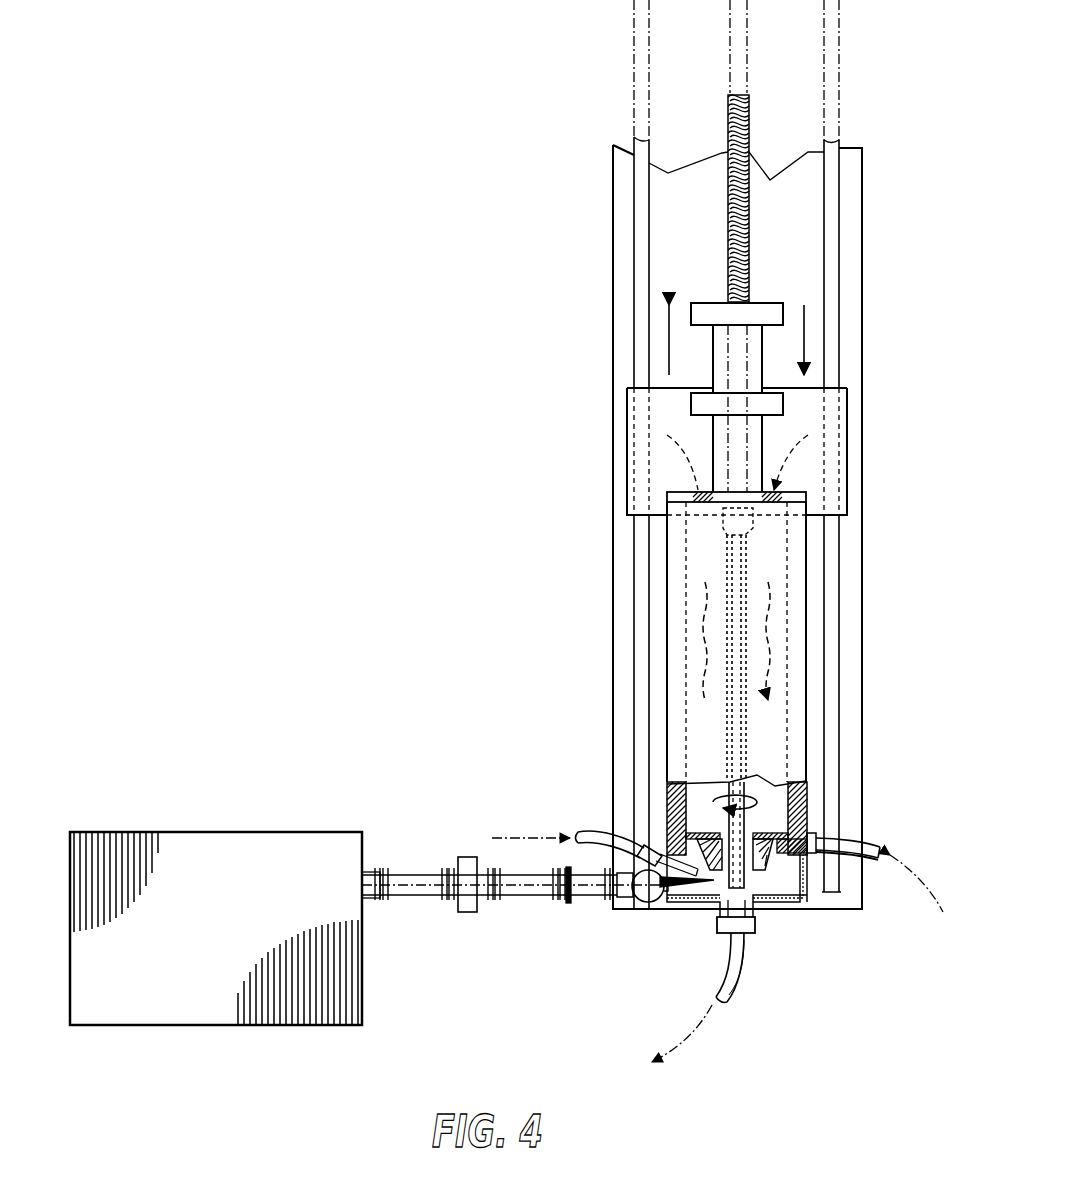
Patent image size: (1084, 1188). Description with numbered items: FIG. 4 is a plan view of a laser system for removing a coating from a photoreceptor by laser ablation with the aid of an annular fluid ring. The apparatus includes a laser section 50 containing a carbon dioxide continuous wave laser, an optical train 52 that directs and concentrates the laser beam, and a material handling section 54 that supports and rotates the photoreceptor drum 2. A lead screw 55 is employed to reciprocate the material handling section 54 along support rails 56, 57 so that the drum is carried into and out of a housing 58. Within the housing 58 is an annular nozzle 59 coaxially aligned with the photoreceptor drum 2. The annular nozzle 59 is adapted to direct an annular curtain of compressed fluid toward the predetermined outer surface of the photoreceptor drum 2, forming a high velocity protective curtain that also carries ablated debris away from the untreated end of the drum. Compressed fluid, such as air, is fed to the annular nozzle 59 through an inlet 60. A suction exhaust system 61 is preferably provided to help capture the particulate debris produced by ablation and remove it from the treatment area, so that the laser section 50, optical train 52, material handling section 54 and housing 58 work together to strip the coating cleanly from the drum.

The photoreceptor drum 2 is at (726, 737).
The laser section 50 is at (218, 932).
The optical train 52 is at (466, 858).
The material handling section 54 is at (749, 464).
The lead screw 55 is at (728, 130).
The support rail 56 is at (637, 276).
The support rail 57 is at (839, 277).
The housing 58 is at (806, 656).
The annular nozzle 59 is at (672, 803).
The inlet 60 is at (868, 842).
The suction exhaust system 61 is at (739, 956).